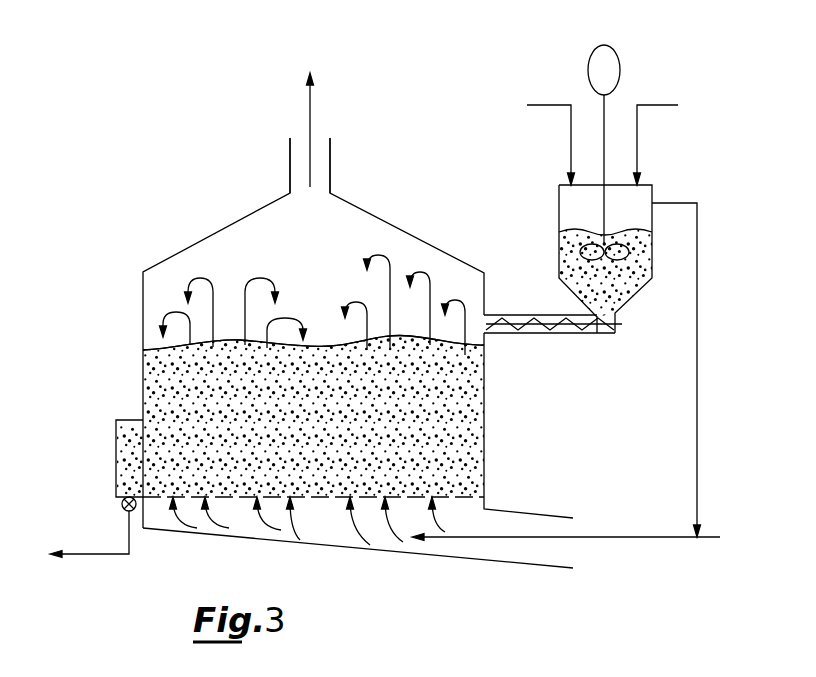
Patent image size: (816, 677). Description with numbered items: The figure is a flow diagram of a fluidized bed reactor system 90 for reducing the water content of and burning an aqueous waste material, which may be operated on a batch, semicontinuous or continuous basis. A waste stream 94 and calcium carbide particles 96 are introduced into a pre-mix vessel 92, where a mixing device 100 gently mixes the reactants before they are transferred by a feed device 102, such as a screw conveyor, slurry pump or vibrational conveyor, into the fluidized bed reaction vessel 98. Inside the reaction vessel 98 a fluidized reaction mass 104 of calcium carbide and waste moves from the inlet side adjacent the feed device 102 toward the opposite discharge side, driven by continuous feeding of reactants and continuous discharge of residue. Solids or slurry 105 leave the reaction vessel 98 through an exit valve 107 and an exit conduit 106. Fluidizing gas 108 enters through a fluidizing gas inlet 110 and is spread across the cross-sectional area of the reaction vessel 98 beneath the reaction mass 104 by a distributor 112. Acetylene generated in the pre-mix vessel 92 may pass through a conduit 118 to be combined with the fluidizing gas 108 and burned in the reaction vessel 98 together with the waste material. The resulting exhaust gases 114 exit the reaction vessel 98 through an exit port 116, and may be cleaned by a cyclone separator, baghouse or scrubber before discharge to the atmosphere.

The reactor system 90 is at (556, 584).
The pre-mix vessel 92 is at (559, 222).
The waste stream 94 is at (548, 104).
The calcium carbide particles 96 is at (659, 104).
The fluidized bed reaction vessel 98 is at (485, 408).
The mixing device 100 is at (606, 52).
The feed device 102 is at (571, 335).
The fluidized reaction mass 104 is at (474, 459).
The solids or slurry 105 is at (78, 553).
The exit conduit 106 is at (116, 437).
The exit valve 107 is at (122, 500).
The fluidizing gas 108 is at (627, 536).
The fluidizing gas inlet 110 is at (447, 565).
The distributor 112 is at (315, 498).
The exhaust gases 114 is at (310, 108).
The exit port 116 is at (290, 160).
The conduit 118 is at (679, 203).